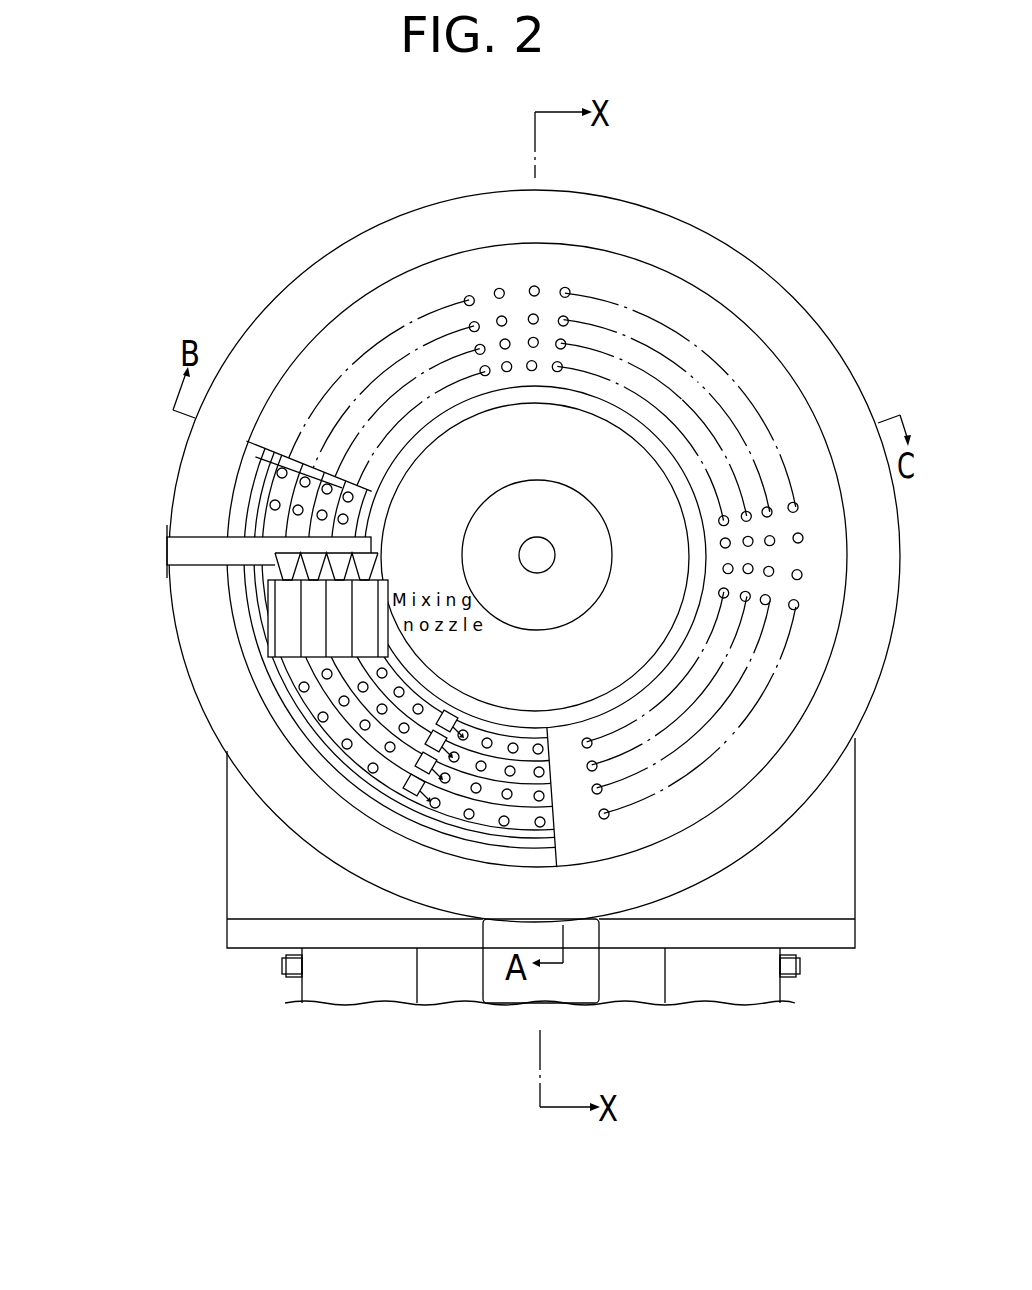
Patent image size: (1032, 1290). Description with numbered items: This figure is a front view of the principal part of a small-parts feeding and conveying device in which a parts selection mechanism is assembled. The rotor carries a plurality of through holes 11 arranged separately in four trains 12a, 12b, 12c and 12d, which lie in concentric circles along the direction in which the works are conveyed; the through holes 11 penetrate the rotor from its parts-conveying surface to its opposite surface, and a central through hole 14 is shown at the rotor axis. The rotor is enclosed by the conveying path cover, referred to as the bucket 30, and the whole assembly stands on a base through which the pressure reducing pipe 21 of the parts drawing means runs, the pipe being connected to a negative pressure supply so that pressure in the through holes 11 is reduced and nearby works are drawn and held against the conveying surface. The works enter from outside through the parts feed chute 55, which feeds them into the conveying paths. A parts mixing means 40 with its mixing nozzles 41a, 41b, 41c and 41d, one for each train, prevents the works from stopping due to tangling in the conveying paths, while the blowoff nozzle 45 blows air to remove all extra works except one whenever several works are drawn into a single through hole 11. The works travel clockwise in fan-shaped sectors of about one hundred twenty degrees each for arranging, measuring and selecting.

The through hole 11 is at (300, 492).
The train of through holes 12a is at (318, 398).
The train of through holes 12b is at (360, 393).
The train of through holes 12c is at (392, 392).
The train of through holes 12d is at (427, 393).
The through hole 14 is at (540, 537).
The pressure reducing pipe 21 is at (228, 852).
The bucket 30 is at (516, 556).
The parts mixing means 40 is at (423, 795).
The mixing nozzle 41a is at (428, 787).
The mixing nozzle 41b is at (455, 780).
The mixing nozzle 41c is at (486, 765).
The mixing nozzle 41d is at (462, 714).
The blowoff nozzle 45 is at (205, 568).
The parts feed chute 55 is at (262, 612).